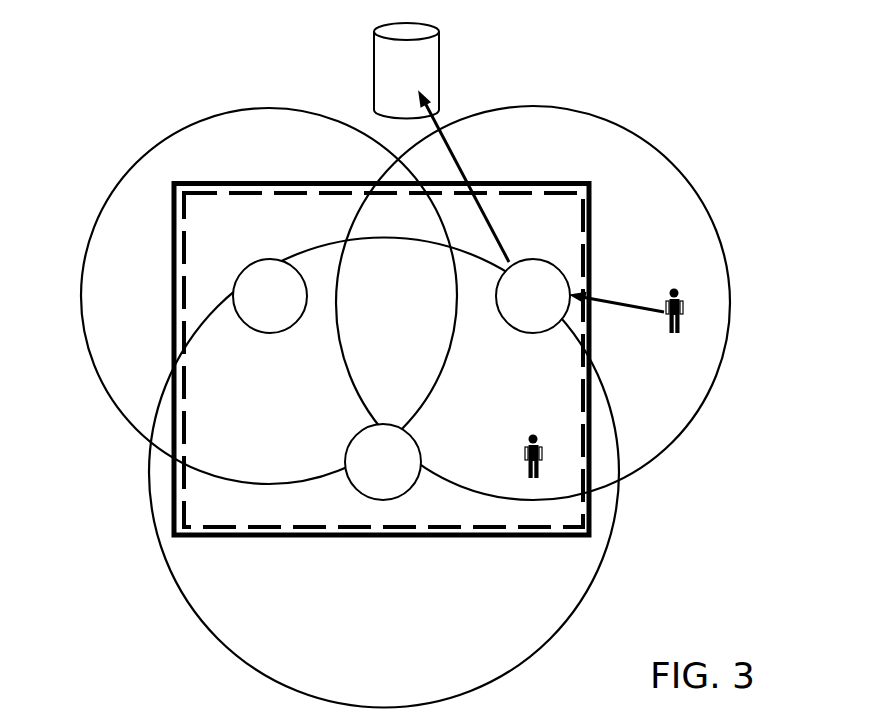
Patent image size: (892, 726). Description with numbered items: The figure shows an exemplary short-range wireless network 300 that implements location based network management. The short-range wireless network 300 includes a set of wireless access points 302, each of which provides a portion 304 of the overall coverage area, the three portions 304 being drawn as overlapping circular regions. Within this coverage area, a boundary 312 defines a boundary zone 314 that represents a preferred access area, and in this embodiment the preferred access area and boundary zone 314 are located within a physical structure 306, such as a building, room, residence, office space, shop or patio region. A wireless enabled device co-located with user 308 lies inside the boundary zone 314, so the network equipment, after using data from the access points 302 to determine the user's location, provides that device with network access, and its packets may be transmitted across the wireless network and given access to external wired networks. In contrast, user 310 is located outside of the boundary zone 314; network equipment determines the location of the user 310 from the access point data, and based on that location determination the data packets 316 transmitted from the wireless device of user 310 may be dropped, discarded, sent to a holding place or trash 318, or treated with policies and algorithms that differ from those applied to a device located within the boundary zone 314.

The short-range wireless network 300 is at (646, 98).
The wireless access point 302 is at (273, 260).
The portion of a coverage area 304 is at (147, 152).
The physical structure 306 is at (591, 522).
The user 308 is at (544, 452).
The user 310 is at (686, 307).
The boundary 312 is at (185, 518).
The boundary zone 314 is at (210, 388).
The data packets 316 is at (609, 298).
The holding place or trash 318 is at (435, 48).